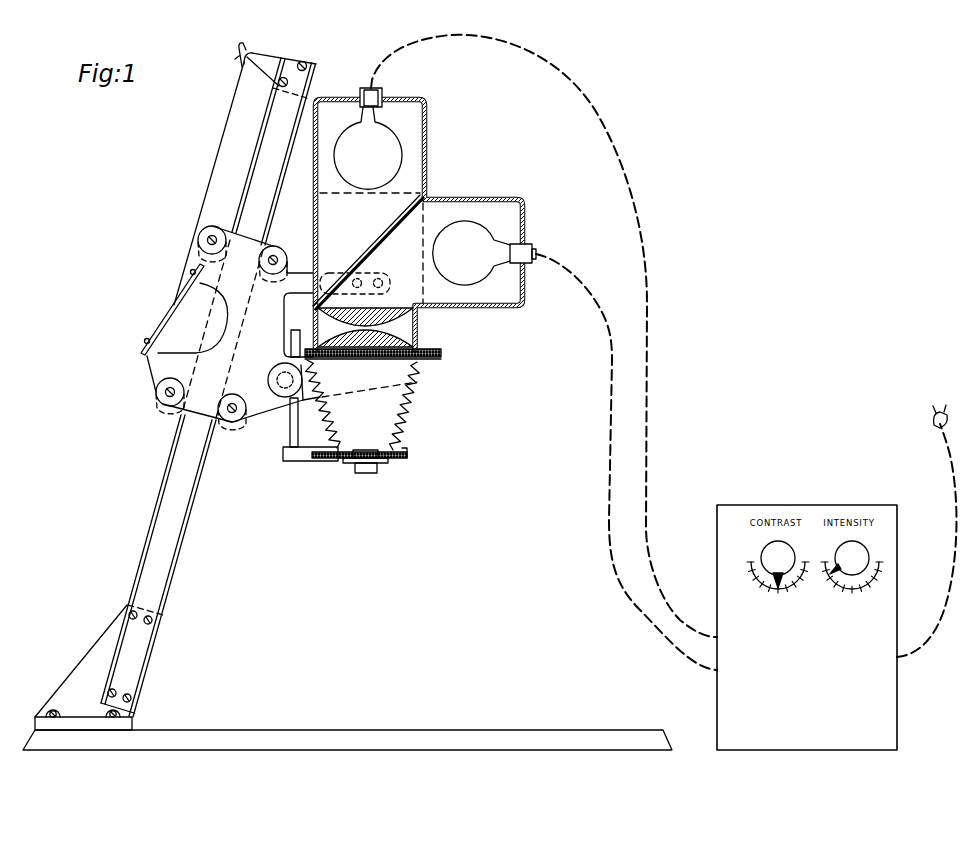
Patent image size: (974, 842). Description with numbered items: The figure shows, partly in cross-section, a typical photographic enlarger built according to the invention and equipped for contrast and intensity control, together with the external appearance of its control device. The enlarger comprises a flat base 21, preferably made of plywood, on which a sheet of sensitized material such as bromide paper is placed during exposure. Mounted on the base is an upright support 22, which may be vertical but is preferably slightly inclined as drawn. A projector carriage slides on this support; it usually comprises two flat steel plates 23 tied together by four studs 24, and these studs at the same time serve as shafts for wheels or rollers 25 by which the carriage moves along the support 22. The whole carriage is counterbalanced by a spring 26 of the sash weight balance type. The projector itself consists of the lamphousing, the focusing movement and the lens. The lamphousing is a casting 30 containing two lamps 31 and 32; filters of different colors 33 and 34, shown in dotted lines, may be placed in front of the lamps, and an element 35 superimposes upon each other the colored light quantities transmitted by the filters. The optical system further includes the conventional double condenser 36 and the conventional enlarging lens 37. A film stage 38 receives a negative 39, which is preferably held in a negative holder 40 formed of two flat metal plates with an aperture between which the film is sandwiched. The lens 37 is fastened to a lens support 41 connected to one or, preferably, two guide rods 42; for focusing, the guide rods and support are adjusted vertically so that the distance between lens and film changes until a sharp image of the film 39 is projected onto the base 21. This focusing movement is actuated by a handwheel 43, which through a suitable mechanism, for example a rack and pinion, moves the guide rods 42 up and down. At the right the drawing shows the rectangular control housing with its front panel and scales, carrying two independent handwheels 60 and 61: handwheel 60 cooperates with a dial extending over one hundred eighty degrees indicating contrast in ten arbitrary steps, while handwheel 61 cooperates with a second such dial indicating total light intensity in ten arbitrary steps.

The flat base 21 is at (340, 735).
The upright support 22 is at (157, 519).
The flat steel plates 23 is at (160, 357).
The studs 24 is at (166, 394).
The wheels or rollers 25 is at (165, 407).
The spring 26 is at (177, 318).
The casting 30 is at (427, 172).
The lamp 31 is at (388, 152).
The lamp 32 is at (468, 235).
The filter 33 is at (352, 193).
The filter 34 is at (423, 262).
The superimposing element 35 is at (373, 252).
The double condenser 36 is at (415, 338).
The enlarging lens 37 is at (380, 468).
The film stage 38 is at (440, 360).
The negative 39 is at (352, 357).
The negative holder 40 is at (444, 350).
The lens support 41 is at (325, 458).
The guide rods 42 is at (291, 420).
The handwheel 43 is at (275, 372).
The handwheel 60 is at (788, 551).
The handwheel 61 is at (862, 551).